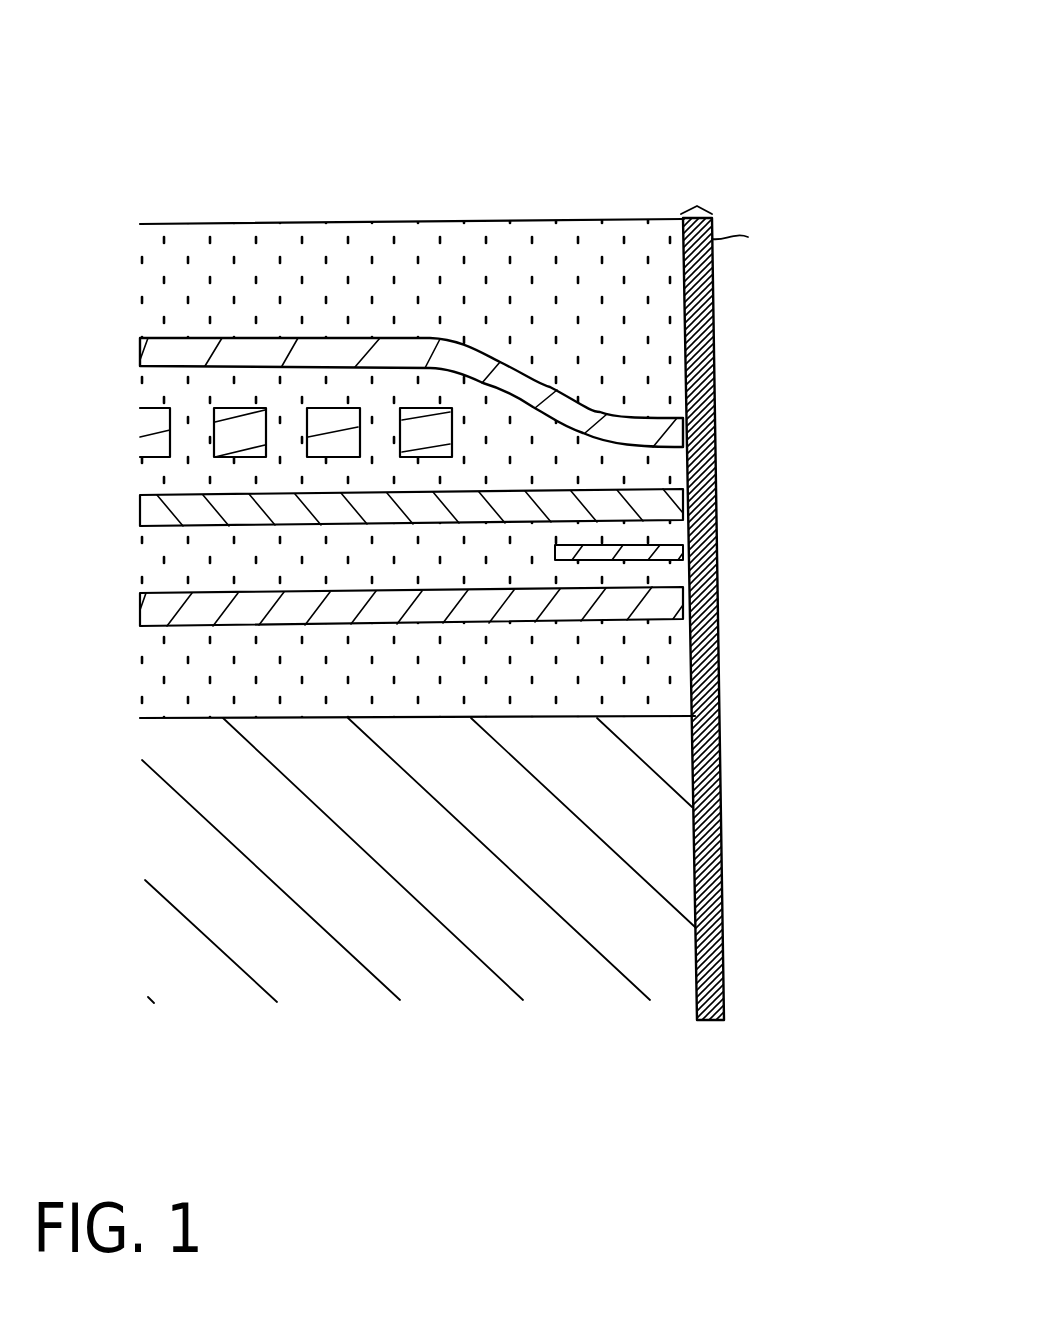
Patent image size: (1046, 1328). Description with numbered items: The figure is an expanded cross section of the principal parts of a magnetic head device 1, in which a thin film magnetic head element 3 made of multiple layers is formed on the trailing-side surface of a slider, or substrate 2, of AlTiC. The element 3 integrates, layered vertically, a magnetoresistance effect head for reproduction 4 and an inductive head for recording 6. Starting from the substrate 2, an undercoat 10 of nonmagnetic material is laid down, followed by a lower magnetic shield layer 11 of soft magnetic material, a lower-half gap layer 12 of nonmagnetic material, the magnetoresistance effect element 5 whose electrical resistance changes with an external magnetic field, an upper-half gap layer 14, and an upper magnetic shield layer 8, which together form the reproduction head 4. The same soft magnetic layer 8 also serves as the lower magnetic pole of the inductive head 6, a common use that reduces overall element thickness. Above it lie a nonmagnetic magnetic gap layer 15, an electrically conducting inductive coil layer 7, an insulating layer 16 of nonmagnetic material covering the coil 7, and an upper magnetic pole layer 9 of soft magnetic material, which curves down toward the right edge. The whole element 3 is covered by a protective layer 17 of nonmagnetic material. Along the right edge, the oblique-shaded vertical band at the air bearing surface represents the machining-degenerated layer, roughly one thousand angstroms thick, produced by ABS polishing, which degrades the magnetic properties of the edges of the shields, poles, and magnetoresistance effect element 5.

The magnetic head device 1 is at (690, 63).
The slider (substrate) 2 is at (683, 784).
The thin film magnetic head element 3 is at (731, 328).
The magnetoresistance effect head for reproduction 4 is at (828, 487).
The magnetoresistance effect element 5 is at (690, 548).
The inductive head for recording 6 is at (803, 405).
The inductive coil layer 7 is at (227, 412).
The lower magnetic pole layer / upper magnetic shield layer 8 is at (683, 497).
The upper magnetic pole layer 9 is at (683, 428).
The undercoat 10 is at (675, 672).
The lower magnetic shield layer 11 is at (687, 617).
The lower-half gap layer 12 is at (675, 567).
The upper-half gap layer 14 is at (675, 532).
The magnetic gap layer 15 is at (683, 458).
The insulating layer 16 is at (303, 388).
The protective layer 17 is at (413, 279).